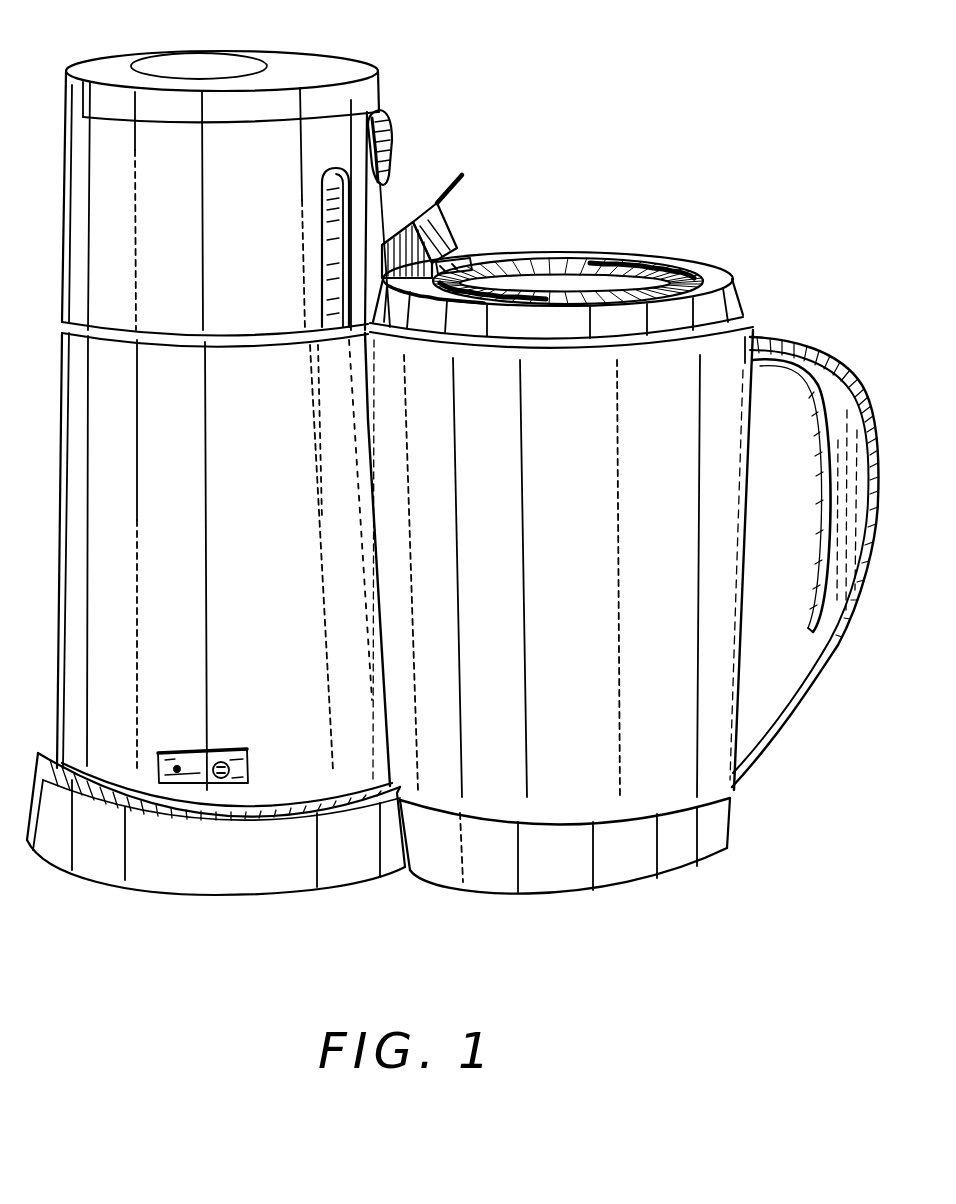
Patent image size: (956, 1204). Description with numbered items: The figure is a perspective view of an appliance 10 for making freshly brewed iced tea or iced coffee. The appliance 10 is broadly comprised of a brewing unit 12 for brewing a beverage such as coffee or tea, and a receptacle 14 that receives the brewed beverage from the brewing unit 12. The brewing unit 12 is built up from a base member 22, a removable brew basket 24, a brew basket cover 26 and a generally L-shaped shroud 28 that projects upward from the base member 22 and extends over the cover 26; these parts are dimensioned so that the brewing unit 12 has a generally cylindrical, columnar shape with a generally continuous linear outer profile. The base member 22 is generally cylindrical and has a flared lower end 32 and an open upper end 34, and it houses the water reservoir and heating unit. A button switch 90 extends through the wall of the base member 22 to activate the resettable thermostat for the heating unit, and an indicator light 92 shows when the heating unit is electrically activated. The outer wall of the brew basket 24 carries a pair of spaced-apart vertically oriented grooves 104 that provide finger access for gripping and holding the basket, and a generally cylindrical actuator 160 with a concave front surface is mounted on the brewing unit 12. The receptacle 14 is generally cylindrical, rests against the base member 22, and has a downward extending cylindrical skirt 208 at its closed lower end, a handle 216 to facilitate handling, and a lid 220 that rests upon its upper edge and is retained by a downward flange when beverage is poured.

The appliance 10 is at (440, 47).
The brewing unit 12 is at (374, 73).
The receptacle 14 is at (772, 327).
The base member 22 is at (275, 600).
The brew basket 24 is at (250, 229).
The brew basket cover 26 is at (278, 58).
The shroud 28 is at (67, 112).
The flared lower end 32 is at (140, 893).
The open upper end 34 is at (222, 347).
The button switch 90 is at (245, 762).
The indicator light 92 is at (190, 783).
The vertically oriented grooves 104 is at (348, 200).
The actuator 160 is at (399, 139).
The cylindrical skirt 208 is at (710, 827).
The handle 216 is at (813, 690).
The lid 220 is at (669, 258).